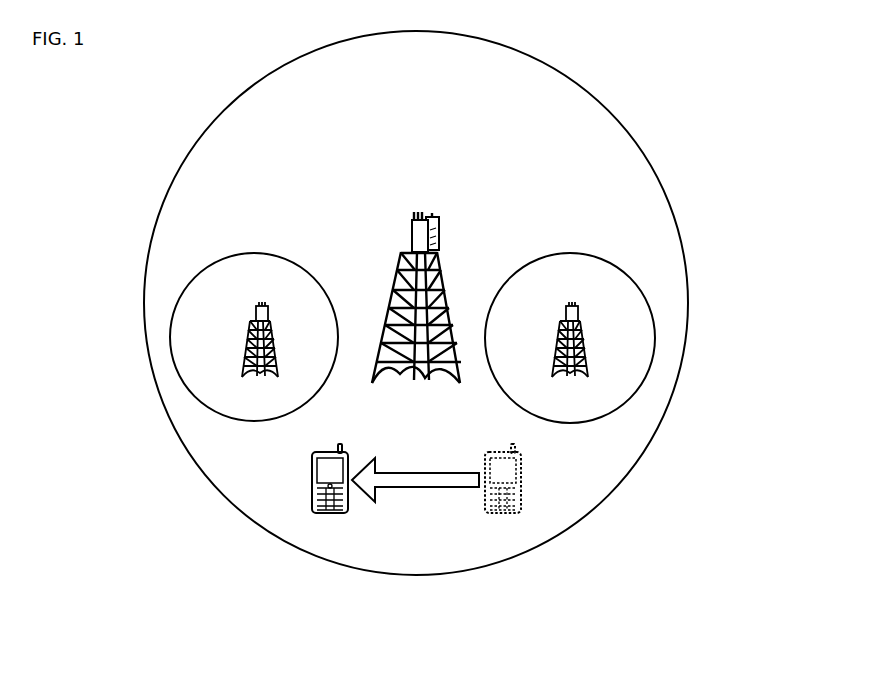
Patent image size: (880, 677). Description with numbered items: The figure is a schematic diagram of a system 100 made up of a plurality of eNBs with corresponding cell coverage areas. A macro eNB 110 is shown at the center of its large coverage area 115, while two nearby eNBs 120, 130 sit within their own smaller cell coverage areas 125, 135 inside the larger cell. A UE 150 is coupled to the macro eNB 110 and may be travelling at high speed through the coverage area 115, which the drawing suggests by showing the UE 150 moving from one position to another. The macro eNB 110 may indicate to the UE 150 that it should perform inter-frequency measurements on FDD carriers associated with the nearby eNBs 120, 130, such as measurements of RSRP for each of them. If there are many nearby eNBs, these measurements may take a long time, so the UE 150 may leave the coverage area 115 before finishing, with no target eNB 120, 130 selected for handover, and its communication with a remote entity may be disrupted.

The system 100 is at (741, 59).
The macro eNB 110 is at (428, 212).
The coverage area 115 is at (222, 496).
The eNB 120 is at (264, 306).
The cell coverage area 125 is at (176, 368).
The eNB 130 is at (576, 306).
The cell coverage area 135 is at (645, 380).
The UE 150 is at (312, 464).